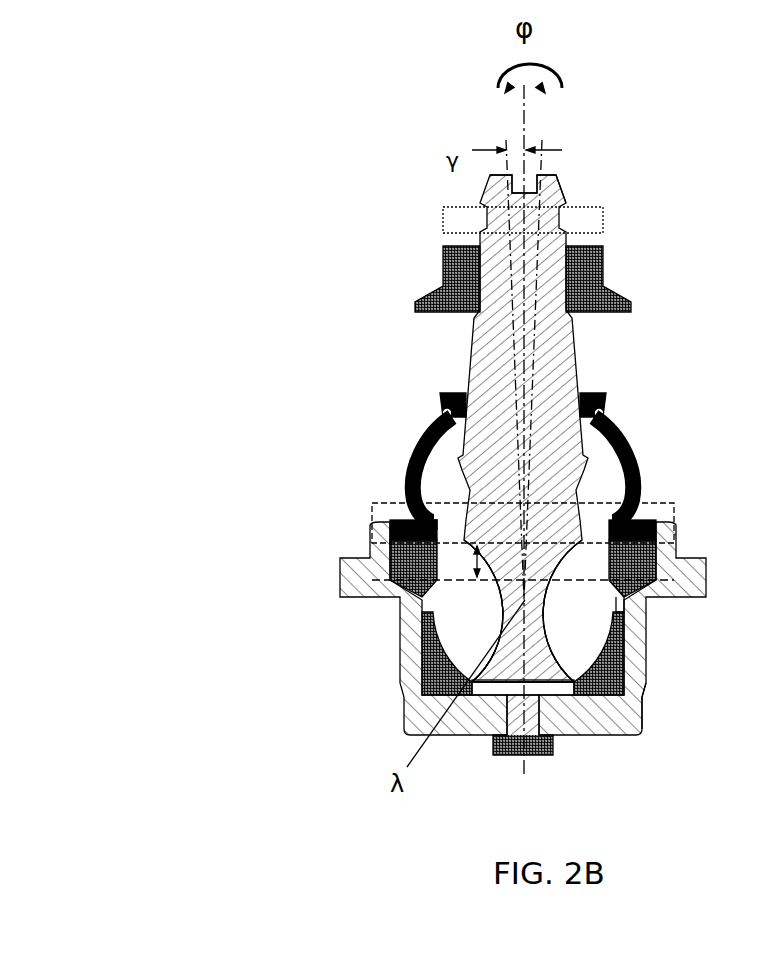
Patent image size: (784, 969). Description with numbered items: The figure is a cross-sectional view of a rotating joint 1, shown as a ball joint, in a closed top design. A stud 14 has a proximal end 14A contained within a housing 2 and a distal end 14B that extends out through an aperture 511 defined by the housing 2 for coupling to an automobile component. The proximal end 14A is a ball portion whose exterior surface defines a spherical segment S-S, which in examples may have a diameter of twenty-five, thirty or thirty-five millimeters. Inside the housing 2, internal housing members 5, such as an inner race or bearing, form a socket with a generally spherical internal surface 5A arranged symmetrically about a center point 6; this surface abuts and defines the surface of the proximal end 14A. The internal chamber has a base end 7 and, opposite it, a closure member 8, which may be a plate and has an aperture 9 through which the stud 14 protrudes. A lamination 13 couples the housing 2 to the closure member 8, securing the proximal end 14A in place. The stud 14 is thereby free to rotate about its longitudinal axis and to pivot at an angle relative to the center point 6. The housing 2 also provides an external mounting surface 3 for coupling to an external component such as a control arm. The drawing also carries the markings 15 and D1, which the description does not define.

The rotating joint 1 is at (318, 124).
The housing 2 is at (427, 708).
The external mounting surface 3 is at (647, 682).
The internal housing members 5 is at (622, 637).
The spherical internal surface 5A is at (615, 570).
The center point 6 is at (525, 600).
The base end 7 is at (552, 702).
The closure member 8 is at (648, 517).
The aperture 9 is at (597, 522).
The lamination 13 is at (655, 505).
The stud 14 is at (553, 298).
The proximal end 14A is at (447, 605).
The distal end 14B is at (560, 197).
The ball center 15 is at (495, 615).
The aperture 511 is at (443, 511).
The distance D1 is at (407, 517).
The spherical segment S-S is at (473, 563).